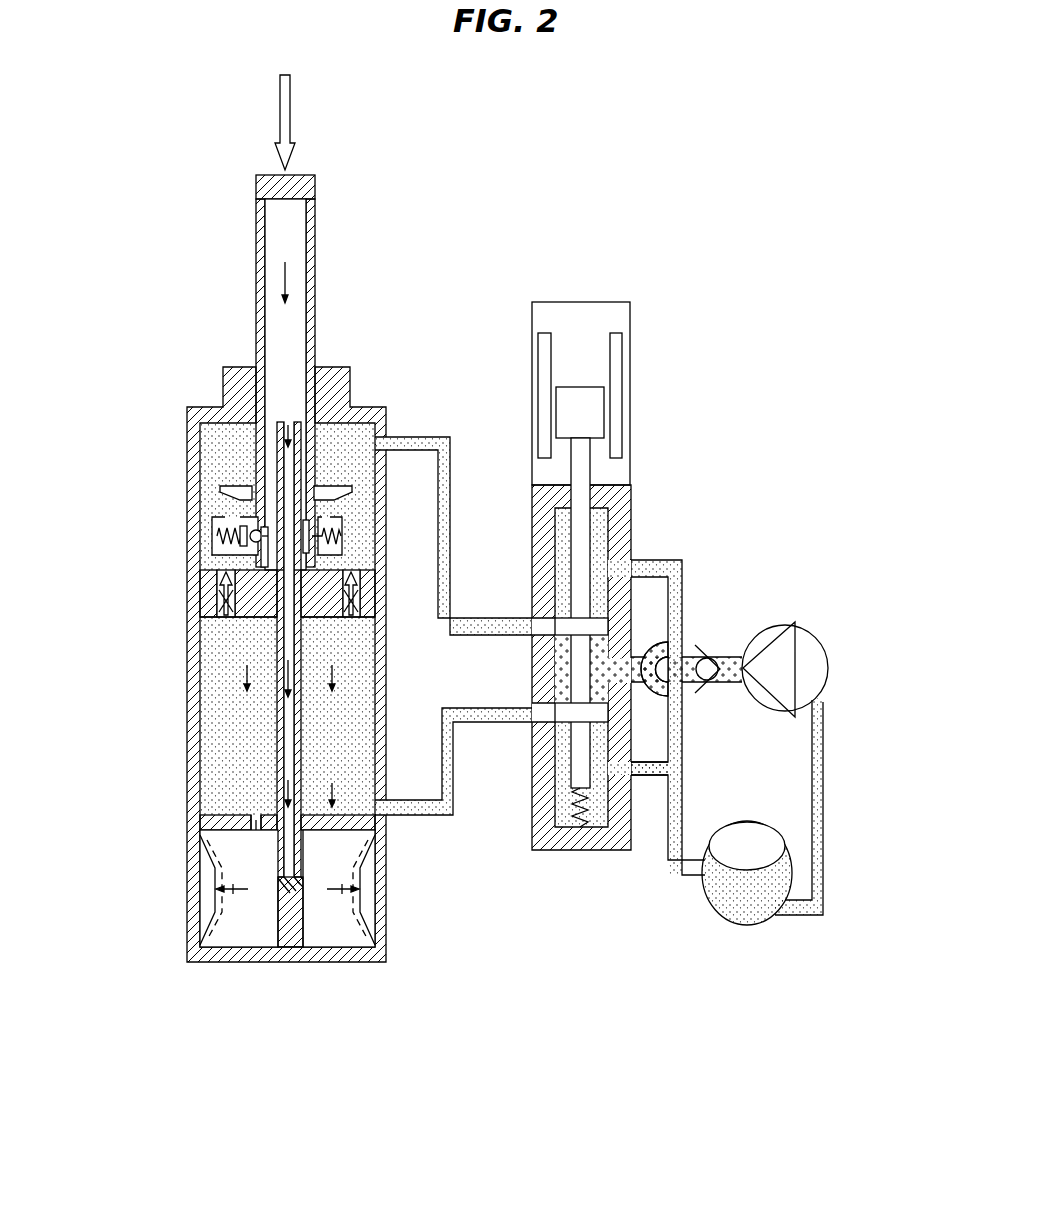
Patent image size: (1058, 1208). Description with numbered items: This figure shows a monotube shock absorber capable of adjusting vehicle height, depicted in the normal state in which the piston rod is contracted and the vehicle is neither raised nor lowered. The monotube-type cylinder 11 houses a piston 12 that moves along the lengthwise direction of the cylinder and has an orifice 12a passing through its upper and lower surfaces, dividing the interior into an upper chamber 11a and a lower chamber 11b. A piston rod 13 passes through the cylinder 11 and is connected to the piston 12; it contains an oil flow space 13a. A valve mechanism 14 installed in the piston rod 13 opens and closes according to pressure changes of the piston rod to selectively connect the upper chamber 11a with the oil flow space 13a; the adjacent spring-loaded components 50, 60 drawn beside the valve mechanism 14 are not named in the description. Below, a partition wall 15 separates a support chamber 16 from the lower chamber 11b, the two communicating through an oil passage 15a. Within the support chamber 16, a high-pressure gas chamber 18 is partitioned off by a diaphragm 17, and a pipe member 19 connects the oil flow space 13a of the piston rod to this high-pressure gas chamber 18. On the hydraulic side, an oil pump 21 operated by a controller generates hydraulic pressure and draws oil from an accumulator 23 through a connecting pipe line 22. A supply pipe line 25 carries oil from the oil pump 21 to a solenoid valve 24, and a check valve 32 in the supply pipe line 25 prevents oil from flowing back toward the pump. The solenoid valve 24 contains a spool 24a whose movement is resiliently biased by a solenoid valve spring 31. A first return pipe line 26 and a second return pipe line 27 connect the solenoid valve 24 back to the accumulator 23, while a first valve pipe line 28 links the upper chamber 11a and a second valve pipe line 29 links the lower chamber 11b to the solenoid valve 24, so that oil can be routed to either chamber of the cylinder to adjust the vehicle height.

The cylinder 11 is at (195, 705).
The upper chamber 11a is at (220, 440).
The lower chamber 11b is at (228, 752).
The piston 12 is at (217, 582).
The orifice 12a is at (200, 625).
The piston rod 13 is at (256, 232).
The oil flow space 13a is at (300, 258).
The valve mechanism 14 is at (212, 505).
The partition wall 15 is at (345, 828).
The oil passage 15a is at (256, 812).
The support chamber 16 is at (330, 928).
The diaphragm 17 is at (222, 936).
The high-pressure gas chamber 18 is at (208, 889).
The pipe member 19 is at (282, 655).
The oil pump 21 is at (825, 635).
The connecting pipe line 22 is at (825, 790).
The accumulator 23 is at (740, 910).
The solenoid valve 24 is at (615, 302).
The spool 24a is at (600, 515).
The supply pipe line 25 is at (727, 662).
The first return pipe line 26 is at (682, 562).
The second return pipe line 27 is at (655, 780).
The first valve pipe line 28 is at (445, 435).
The second valve pipe line 29 is at (448, 812).
The solenoid valve spring 31 is at (585, 830).
The check valve 32 is at (712, 680).
The left spring-loaded detent 50 is at (212, 535).
The right spring-loaded detent 60 is at (342, 538).